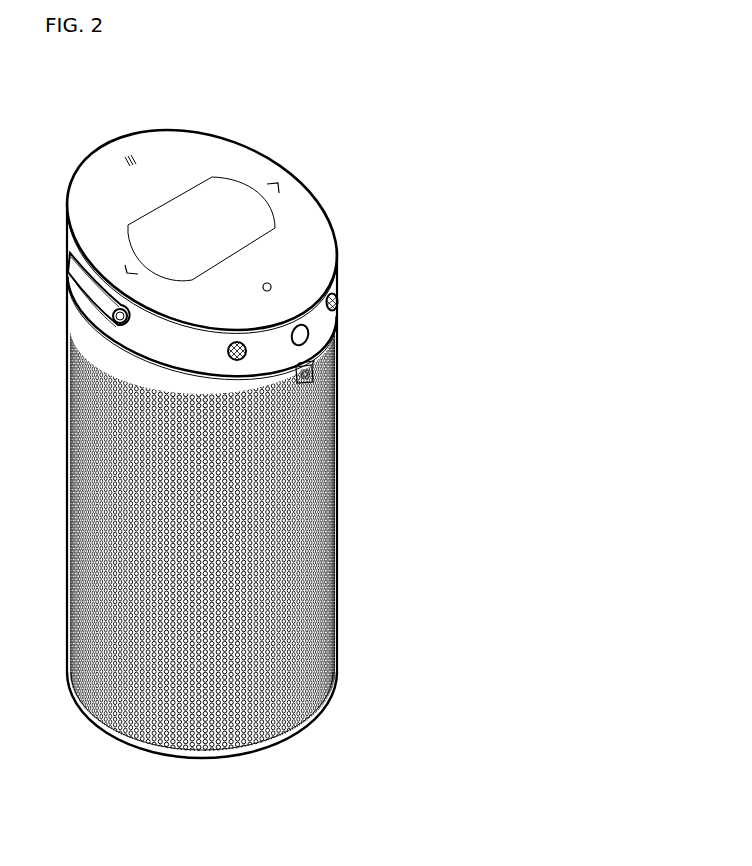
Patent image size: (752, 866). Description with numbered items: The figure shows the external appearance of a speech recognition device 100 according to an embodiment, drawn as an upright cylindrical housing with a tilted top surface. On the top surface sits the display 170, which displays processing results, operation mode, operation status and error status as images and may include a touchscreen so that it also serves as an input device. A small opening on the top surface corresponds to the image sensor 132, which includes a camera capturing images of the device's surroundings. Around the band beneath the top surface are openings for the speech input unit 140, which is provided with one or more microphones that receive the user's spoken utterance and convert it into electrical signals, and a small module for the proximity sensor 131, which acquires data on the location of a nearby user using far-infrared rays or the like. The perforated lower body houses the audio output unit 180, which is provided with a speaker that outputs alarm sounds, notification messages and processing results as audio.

The speech recognition device 100 is at (229, 418).
The display 170 is at (228, 192).
The image sensor 132 is at (269, 283).
The speech input unit 140 is at (243, 350).
The proximity sensor 131 is at (313, 373).
The audio output unit 180 is at (337, 505).